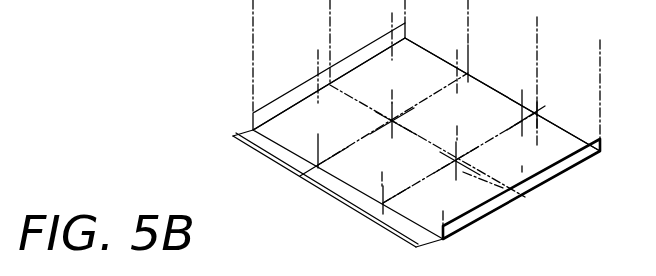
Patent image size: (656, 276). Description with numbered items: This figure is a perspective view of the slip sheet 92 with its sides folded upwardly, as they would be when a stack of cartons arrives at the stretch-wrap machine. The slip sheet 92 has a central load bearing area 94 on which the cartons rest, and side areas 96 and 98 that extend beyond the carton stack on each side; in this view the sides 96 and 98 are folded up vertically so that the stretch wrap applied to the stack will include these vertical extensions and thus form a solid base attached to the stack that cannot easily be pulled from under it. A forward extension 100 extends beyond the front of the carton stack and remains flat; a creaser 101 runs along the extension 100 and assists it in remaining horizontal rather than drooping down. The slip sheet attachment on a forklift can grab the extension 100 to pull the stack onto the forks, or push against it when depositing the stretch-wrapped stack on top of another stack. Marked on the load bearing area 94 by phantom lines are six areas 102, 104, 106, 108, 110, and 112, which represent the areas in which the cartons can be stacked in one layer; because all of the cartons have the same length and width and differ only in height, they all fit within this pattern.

The slip sheet 92 is at (490, 78).
The central load bearing area 94 is at (500, 108).
The side area 96 is at (503, 200).
The side area 98 is at (283, 96).
The forward extension 100 is at (310, 182).
The creaser 101 is at (352, 196).
The carton stacking area 102 is at (420, 89).
The carton stacking area 104 is at (480, 123).
The carton stacking area 106 is at (547, 164).
The carton stacking area 108 is at (343, 131).
The carton stacking area 110 is at (395, 170).
The carton stacking area 112 is at (463, 209).